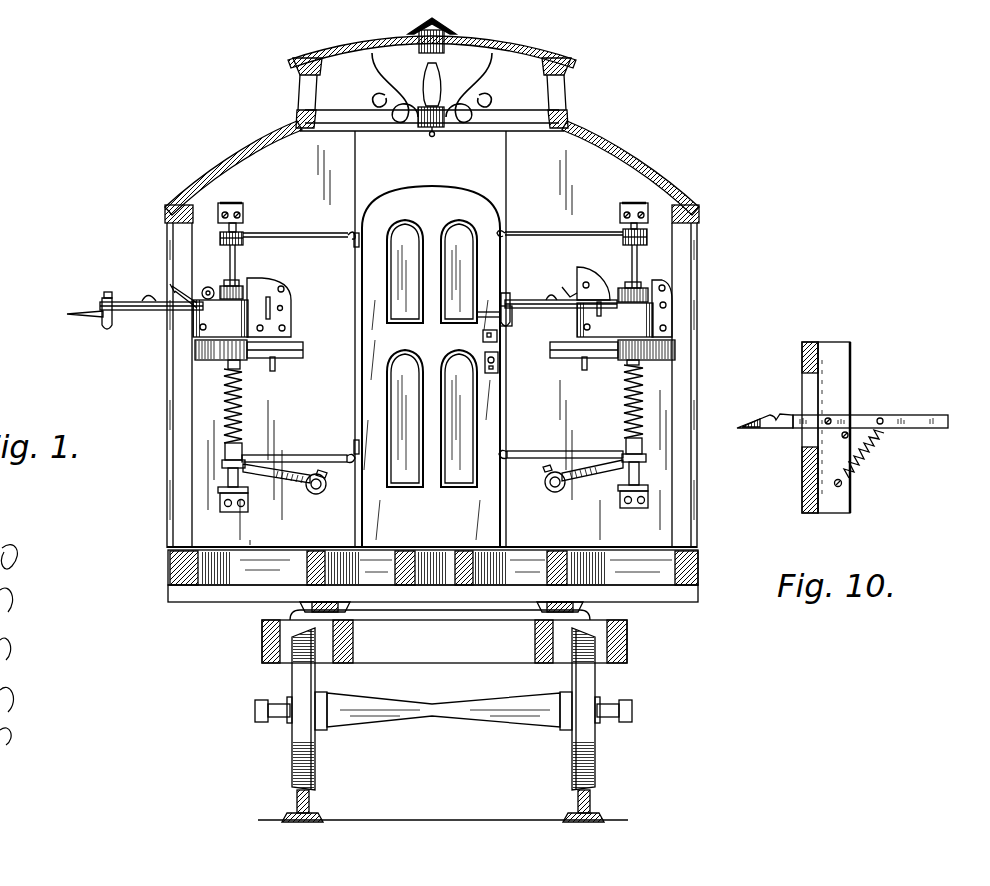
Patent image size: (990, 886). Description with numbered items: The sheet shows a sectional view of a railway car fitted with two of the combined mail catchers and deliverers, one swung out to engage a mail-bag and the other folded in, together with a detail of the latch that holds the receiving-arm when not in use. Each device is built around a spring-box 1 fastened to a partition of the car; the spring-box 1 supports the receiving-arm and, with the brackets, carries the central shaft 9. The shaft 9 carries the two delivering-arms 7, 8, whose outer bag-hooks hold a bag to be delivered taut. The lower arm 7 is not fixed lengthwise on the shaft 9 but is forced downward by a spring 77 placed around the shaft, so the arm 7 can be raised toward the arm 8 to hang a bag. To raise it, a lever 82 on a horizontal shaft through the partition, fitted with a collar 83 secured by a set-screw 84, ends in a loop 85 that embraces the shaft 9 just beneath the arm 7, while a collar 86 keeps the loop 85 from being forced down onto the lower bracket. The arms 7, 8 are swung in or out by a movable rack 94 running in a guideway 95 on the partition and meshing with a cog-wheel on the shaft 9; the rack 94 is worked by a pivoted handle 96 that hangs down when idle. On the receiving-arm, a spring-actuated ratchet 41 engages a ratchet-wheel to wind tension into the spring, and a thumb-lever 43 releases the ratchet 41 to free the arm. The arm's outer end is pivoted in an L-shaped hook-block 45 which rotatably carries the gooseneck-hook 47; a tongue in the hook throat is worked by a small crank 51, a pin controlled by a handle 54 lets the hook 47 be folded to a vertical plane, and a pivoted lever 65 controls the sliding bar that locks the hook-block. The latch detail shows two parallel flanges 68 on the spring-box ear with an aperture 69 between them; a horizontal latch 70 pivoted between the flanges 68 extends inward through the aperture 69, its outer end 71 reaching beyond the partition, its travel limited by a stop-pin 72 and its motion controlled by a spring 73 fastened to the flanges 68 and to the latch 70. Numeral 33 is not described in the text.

In FIG. 1, the spring-box 1 is at (432, 307).
In FIG. 1, the lower delivering-arm 7 is at (432, 451).
In FIG. 1, the upper delivering-arm 8 is at (433, 226).
In FIG. 1, the central shaft 9 is at (236, 270).
In FIG. 1, the spring-actuated ratchet 41 is at (210, 285).
In FIG. 1, the thumb-lever 43 is at (390, 287).
In FIG. 1, the pivoted hook-block 45 is at (100, 306).
In FIG. 1, the gooseneck-hook 47 is at (90, 316).
In FIG. 1, the crank 51 is at (113, 289).
In FIG. 1, the handle 54 is at (313, 313).
In FIG. 1, the pivoted lever 65 is at (346, 292).
In FIG. 1, the spring 77 is at (433, 404).
In FIG. 1, the lever 82 is at (275, 478).
In FIG. 1, the collar 83 is at (314, 494).
In FIG. 1, the set-screw 84 is at (327, 475).
In FIG. 1, the loop 85 is at (243, 452).
In FIG. 1, the collar 86 is at (228, 482).
In FIG. 1, the movable rack 94 is at (210, 361).
In FIG. 1, the guideway 95 is at (268, 358).
In FIG. 1, the handle 96 is at (276, 370).
In FIG. 10, the post 33 is at (837, 350).
In FIG. 10, the parallel flanges 68 is at (841, 392).
In FIG. 10, the aperture 69 is at (810, 385).
In FIG. 10, the horizontal latch 70 is at (763, 431).
In FIG. 10, the outer end of latch 71 is at (938, 421).
In FIG. 10, the stop-pin 72 is at (843, 437).
In FIG. 10, the spring 73 is at (866, 455).